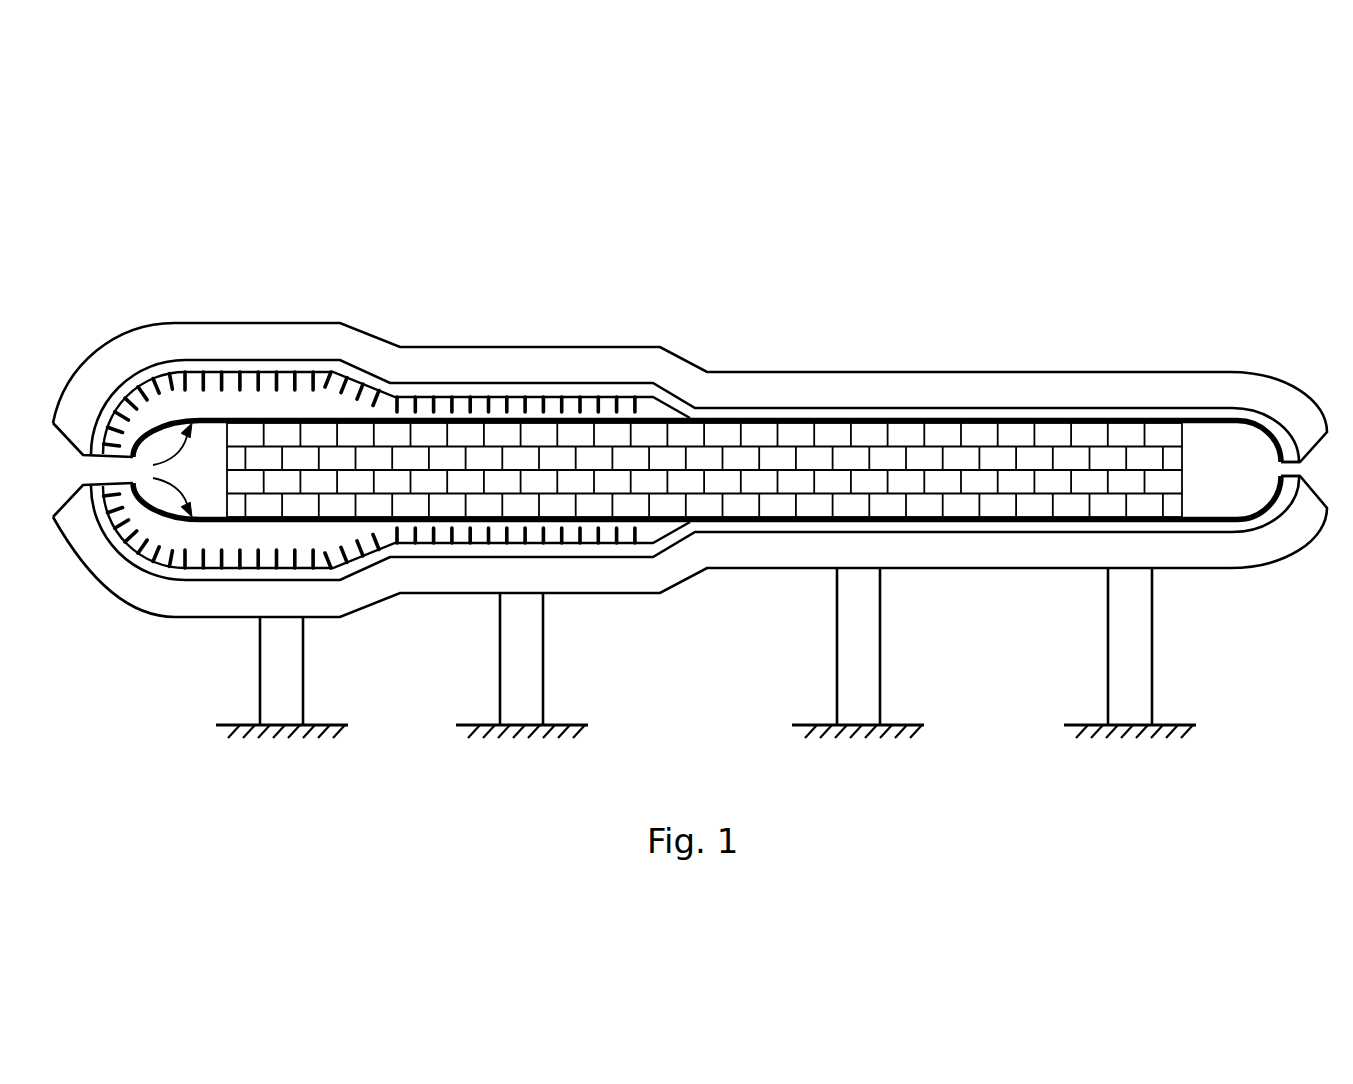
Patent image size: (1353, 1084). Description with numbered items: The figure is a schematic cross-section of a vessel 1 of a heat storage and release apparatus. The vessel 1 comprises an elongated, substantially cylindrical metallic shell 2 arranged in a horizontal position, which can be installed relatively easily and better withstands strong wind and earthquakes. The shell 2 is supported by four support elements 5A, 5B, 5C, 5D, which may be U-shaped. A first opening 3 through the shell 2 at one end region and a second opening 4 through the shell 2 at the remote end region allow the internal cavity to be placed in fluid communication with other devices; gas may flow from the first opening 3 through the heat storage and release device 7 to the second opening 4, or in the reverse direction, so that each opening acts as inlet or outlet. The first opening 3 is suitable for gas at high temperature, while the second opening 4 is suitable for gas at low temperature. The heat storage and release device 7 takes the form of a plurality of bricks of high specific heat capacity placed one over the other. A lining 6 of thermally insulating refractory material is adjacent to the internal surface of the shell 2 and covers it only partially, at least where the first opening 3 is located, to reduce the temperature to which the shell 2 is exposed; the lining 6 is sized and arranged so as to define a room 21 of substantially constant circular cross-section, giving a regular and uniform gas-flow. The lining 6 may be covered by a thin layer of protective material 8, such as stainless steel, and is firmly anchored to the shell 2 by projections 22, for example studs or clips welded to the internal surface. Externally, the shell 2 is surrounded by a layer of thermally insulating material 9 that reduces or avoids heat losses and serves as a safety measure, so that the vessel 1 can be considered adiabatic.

The vessel 1 is at (671, 194).
The shell 2 is at (1123, 413).
The first opening 3 is at (93, 470).
The second opening 4 is at (1307, 470).
The support element 5A is at (279, 705).
The support element 5B is at (521, 701).
The support element 5C is at (858, 701).
The support element 5D is at (1129, 701).
The lining 6 is at (322, 400).
The heat storage and release device 7 is at (888, 457).
The layer of protective material 8 is at (161, 470).
The layer of thermally insulating material 9 is at (527, 365).
The room 21 is at (714, 473).
The projections 22 is at (183, 380).